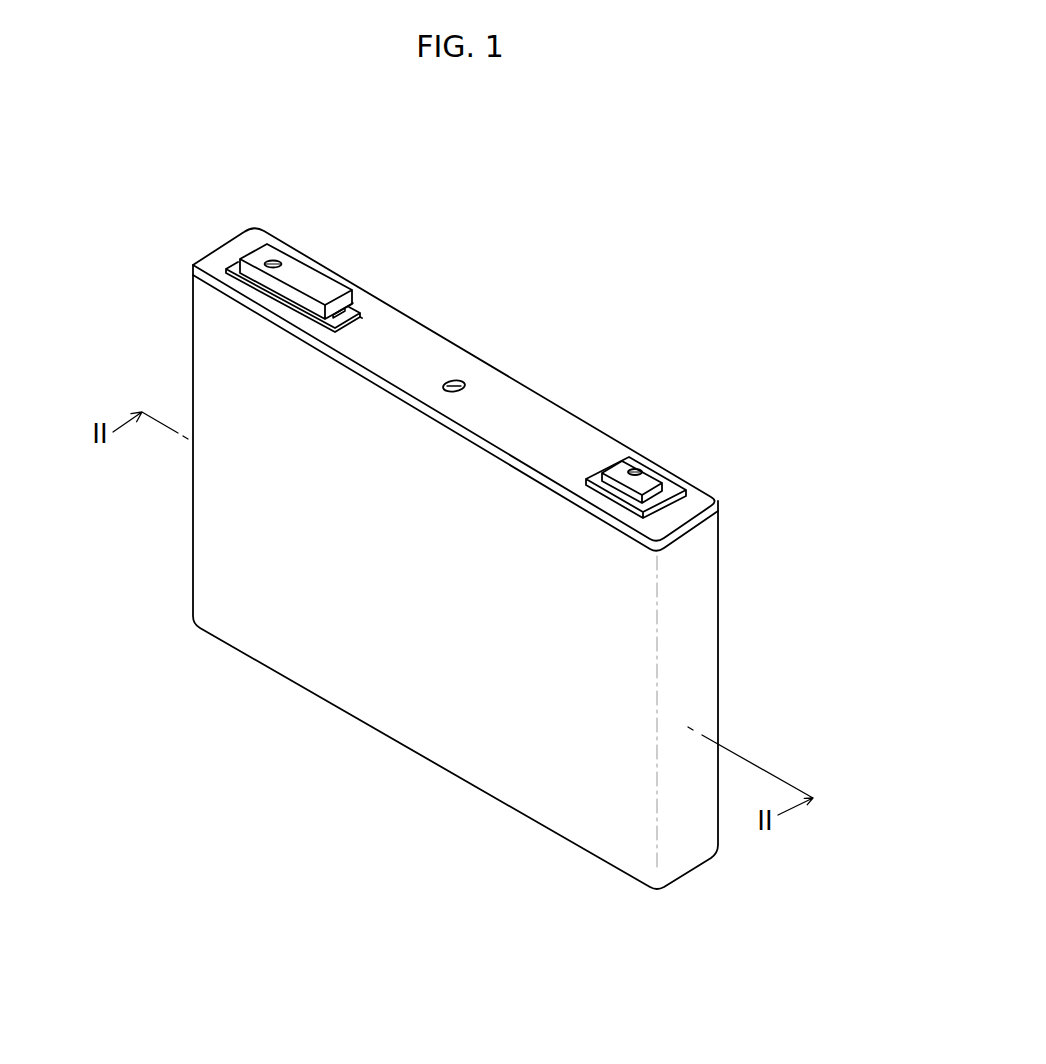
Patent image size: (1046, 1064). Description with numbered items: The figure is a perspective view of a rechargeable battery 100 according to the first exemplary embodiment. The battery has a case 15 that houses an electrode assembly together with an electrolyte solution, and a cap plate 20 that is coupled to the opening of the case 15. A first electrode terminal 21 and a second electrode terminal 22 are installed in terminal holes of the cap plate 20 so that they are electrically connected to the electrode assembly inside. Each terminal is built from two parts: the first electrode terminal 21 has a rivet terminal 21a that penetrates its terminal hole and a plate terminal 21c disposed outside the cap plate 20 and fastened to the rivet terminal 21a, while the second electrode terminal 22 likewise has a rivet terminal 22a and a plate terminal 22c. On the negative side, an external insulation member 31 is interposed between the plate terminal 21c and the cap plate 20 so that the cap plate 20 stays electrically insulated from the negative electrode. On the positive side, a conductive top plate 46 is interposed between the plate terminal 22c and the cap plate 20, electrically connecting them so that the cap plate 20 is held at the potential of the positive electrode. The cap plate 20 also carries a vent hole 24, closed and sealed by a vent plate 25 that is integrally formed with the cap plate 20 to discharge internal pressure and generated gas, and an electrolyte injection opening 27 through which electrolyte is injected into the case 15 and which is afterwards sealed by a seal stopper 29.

The rechargeable battery 100 is at (537, 129).
The case 15 is at (390, 722).
The cap plate 20 is at (530, 400).
The first electrode terminal 21 is at (309, 253).
The rivet terminal 21a is at (276, 261).
The plate terminal 21c is at (317, 281).
The second electrode terminal 22 is at (679, 442).
The rivet terminal 22a is at (637, 469).
The plate terminal 22c is at (665, 485).
The vent hole 24 is at (350, 312).
The vent plate 25 is at (372, 330).
The electrolyte injection opening 27 is at (452, 381).
The seal stopper 29 is at (466, 385).
The external insulation member 31 is at (226, 268).
The conductive top plate 46 is at (686, 490).